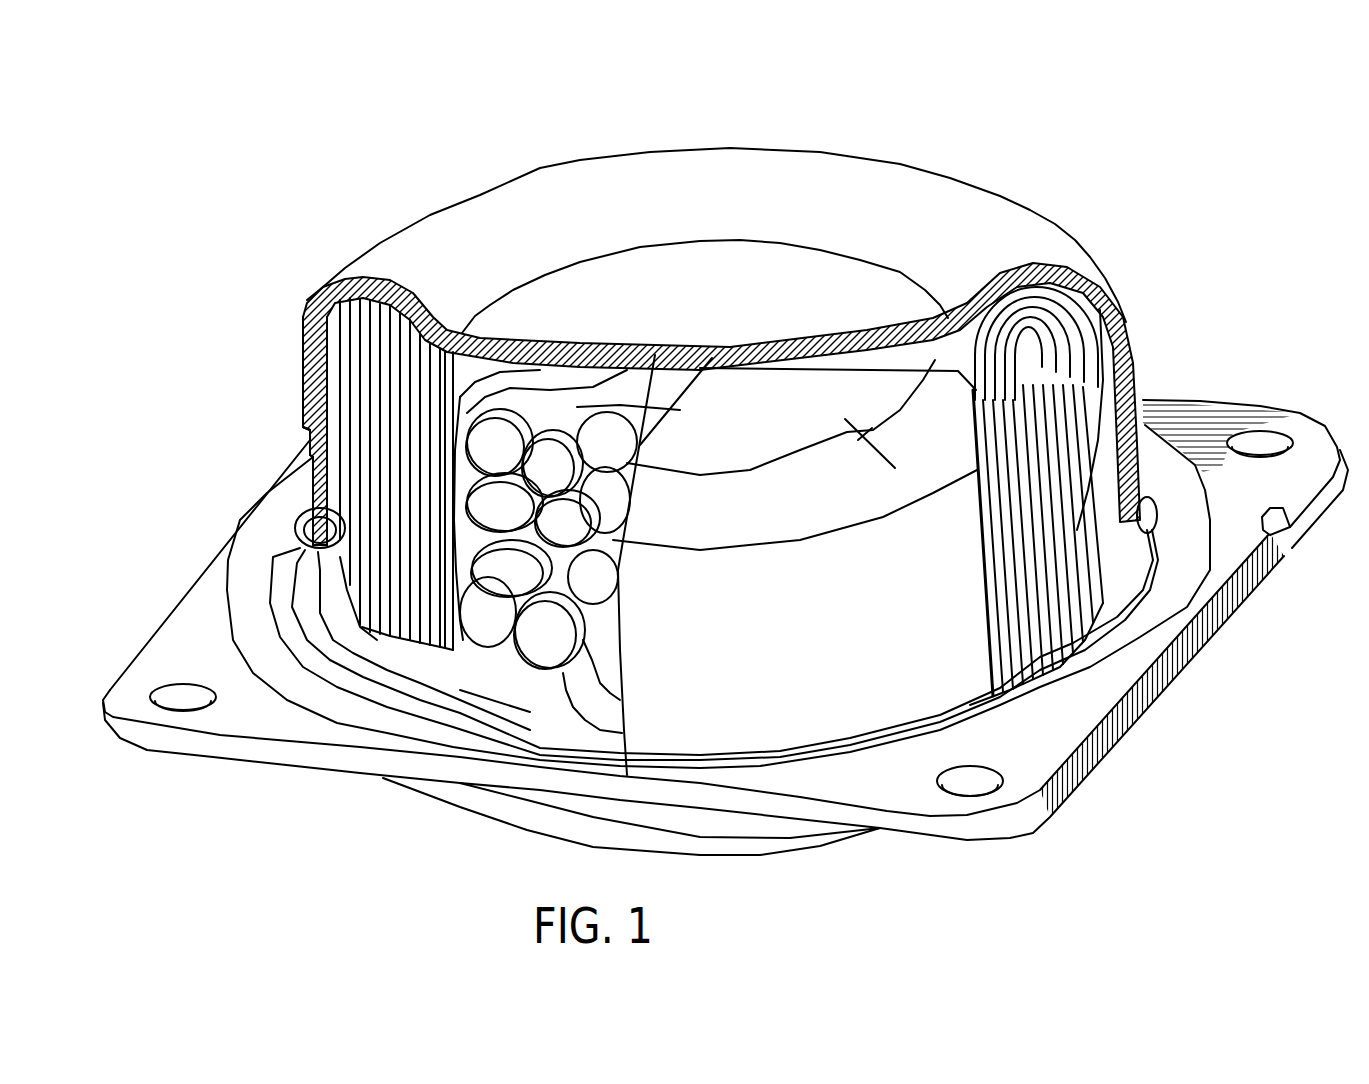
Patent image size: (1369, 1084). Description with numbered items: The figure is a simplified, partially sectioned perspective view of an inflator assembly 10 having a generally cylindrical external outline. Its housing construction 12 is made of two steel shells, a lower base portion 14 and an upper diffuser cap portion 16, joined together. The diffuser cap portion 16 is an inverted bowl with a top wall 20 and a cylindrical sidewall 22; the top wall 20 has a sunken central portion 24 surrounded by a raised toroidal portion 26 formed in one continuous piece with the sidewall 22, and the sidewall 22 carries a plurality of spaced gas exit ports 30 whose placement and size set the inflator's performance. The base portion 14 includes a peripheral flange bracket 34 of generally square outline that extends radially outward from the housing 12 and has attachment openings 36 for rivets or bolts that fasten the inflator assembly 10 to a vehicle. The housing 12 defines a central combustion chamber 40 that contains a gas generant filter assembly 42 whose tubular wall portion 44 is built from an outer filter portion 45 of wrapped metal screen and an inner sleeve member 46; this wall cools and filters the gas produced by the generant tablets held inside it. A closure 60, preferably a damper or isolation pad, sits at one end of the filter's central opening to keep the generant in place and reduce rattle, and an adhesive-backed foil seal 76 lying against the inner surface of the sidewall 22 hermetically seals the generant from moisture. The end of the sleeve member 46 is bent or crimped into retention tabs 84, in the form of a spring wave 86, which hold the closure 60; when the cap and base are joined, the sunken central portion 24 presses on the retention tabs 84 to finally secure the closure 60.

The inflator assembly 10 is at (1310, 256).
The housing construction 12 is at (737, 339).
The base portion 14 is at (725, 627).
The diffuser cap portion 16 is at (300, 337).
The top wall 20 is at (492, 172).
The cylindrical sidewall 22 is at (235, 431).
The sunken central portion 24 is at (549, 172).
The raised toroidal portion 26 is at (824, 281).
The gas exit ports 30 is at (271, 452).
The peripheral flange bracket 34 is at (653, 596).
The attachment openings 36 is at (134, 674).
The combustion chamber 40 is at (591, 505).
The gas generant filter assembly 42 is at (1043, 562).
The tubular wall portion 44 is at (1023, 608).
The outer filter portion 45 is at (424, 691).
The inner sleeve member 46 is at (323, 522).
The closure 60 is at (802, 403).
The adhesive-backed foil seal 76 is at (367, 421).
The retention tabs 84 is at (795, 490).
The spring wave 86 is at (739, 579).